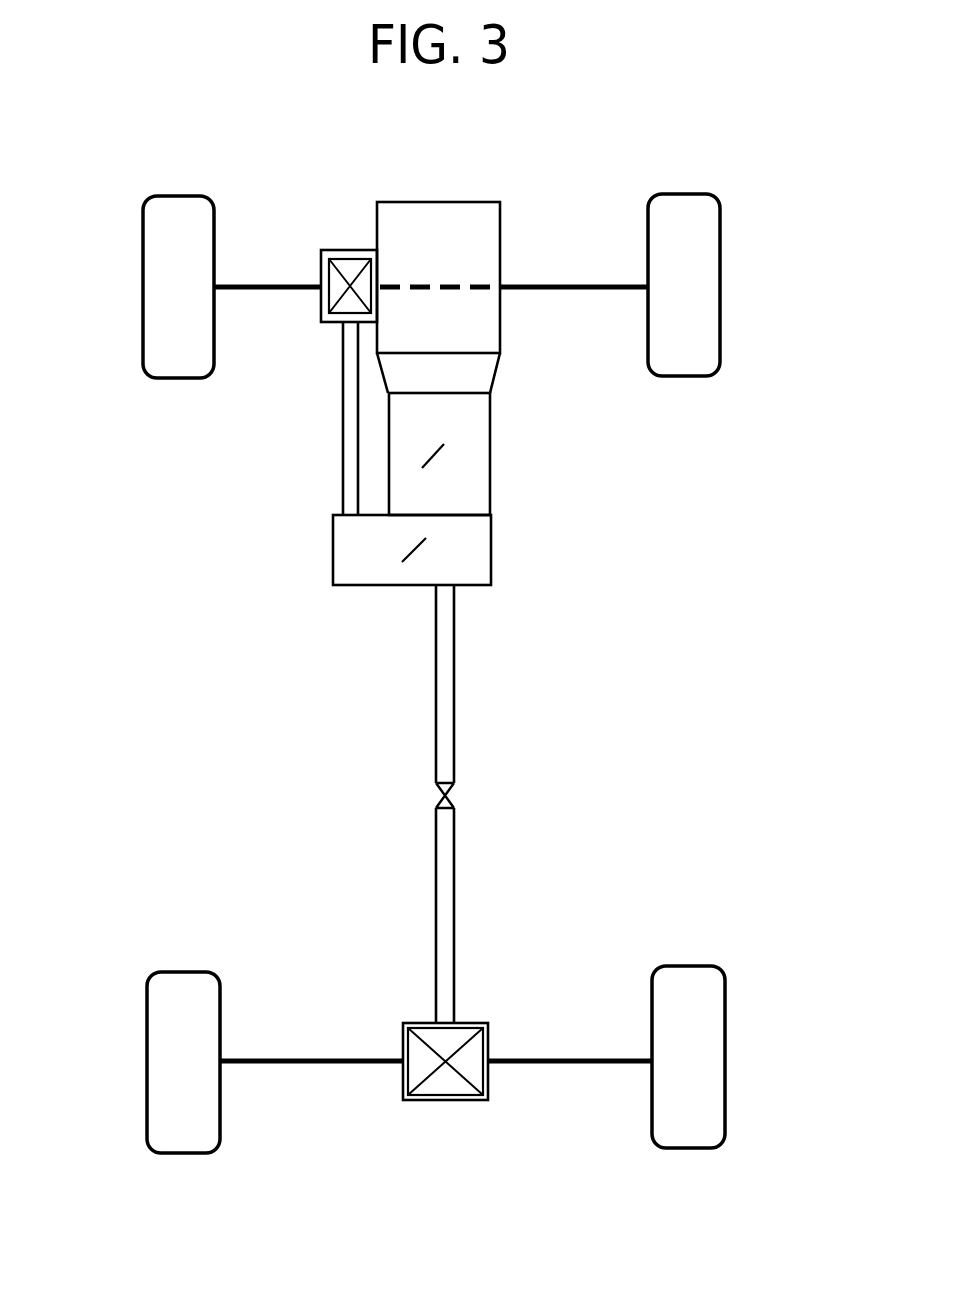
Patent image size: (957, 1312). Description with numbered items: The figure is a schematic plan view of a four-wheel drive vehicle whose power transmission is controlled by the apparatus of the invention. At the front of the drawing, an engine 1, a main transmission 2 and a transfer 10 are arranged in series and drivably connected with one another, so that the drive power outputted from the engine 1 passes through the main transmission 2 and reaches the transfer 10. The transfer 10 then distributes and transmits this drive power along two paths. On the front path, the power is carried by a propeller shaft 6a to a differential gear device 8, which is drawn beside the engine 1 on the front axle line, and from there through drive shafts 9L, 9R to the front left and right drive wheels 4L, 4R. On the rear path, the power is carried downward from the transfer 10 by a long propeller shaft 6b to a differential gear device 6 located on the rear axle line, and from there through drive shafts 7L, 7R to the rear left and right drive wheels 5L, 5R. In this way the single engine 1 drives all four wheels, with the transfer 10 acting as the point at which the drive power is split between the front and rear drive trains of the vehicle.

The engine 1 is at (463, 202).
The main transmission 2 is at (492, 452).
The front left drive wheel 4L is at (155, 252).
The front right drive wheel 4R is at (722, 240).
The rear left drive wheel 5L is at (167, 1032).
The rear right drive wheel 5R is at (725, 1027).
The differential gear device 6 is at (489, 1020).
The propeller shaft 6a is at (343, 462).
The propeller shaft 6b is at (455, 715).
The drive shaft 7L is at (310, 1060).
The drive shaft 7R is at (570, 1066).
The differential gear device 8 is at (321, 318).
The drive shaft 9L is at (265, 287).
The drive shaft 9R is at (562, 288).
The transfer 10 is at (493, 542).